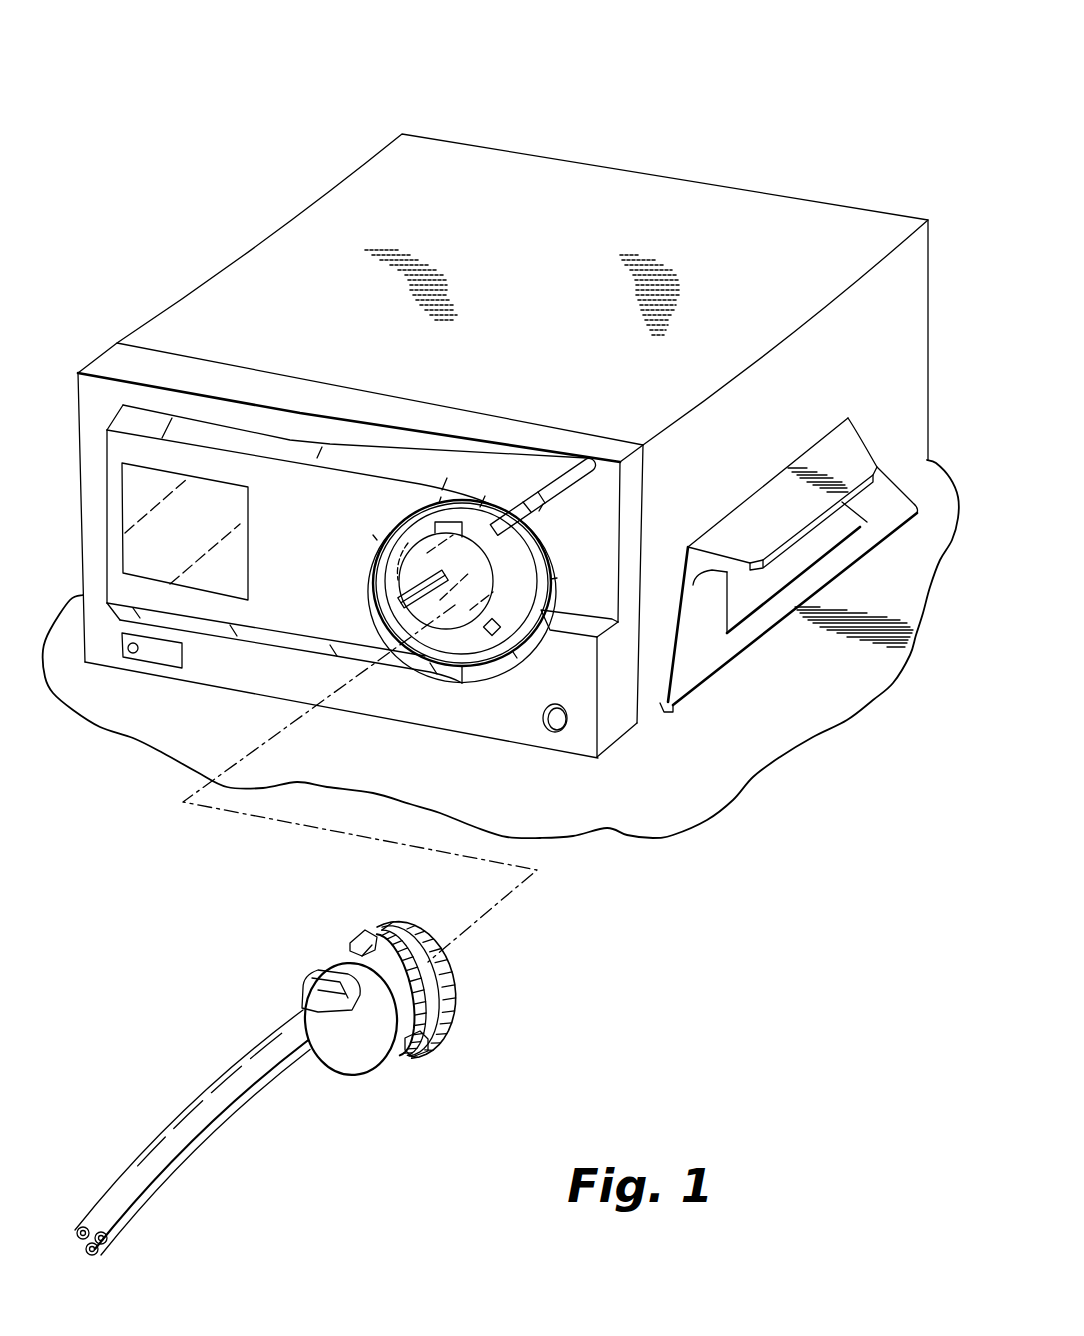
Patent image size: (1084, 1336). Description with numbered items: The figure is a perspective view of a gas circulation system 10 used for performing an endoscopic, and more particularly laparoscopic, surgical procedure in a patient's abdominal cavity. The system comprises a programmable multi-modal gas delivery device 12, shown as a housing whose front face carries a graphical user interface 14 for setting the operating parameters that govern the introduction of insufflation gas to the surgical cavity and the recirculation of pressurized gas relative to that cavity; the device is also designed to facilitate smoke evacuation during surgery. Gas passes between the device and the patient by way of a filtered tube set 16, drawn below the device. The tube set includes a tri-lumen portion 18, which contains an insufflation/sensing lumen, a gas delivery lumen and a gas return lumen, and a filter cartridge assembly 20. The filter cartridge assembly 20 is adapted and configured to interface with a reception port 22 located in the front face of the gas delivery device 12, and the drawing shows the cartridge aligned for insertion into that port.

The gas circulation system 10 is at (198, 176).
The multi-modal gas delivery device 12 is at (587, 190).
The graphical user interface 14 is at (215, 572).
The filtered tube set 16 is at (208, 1016).
The tri-lumen portion 18 is at (223, 1123).
The filter cartridge assembly 20 is at (440, 1017).
The reception port 22 is at (453, 605).